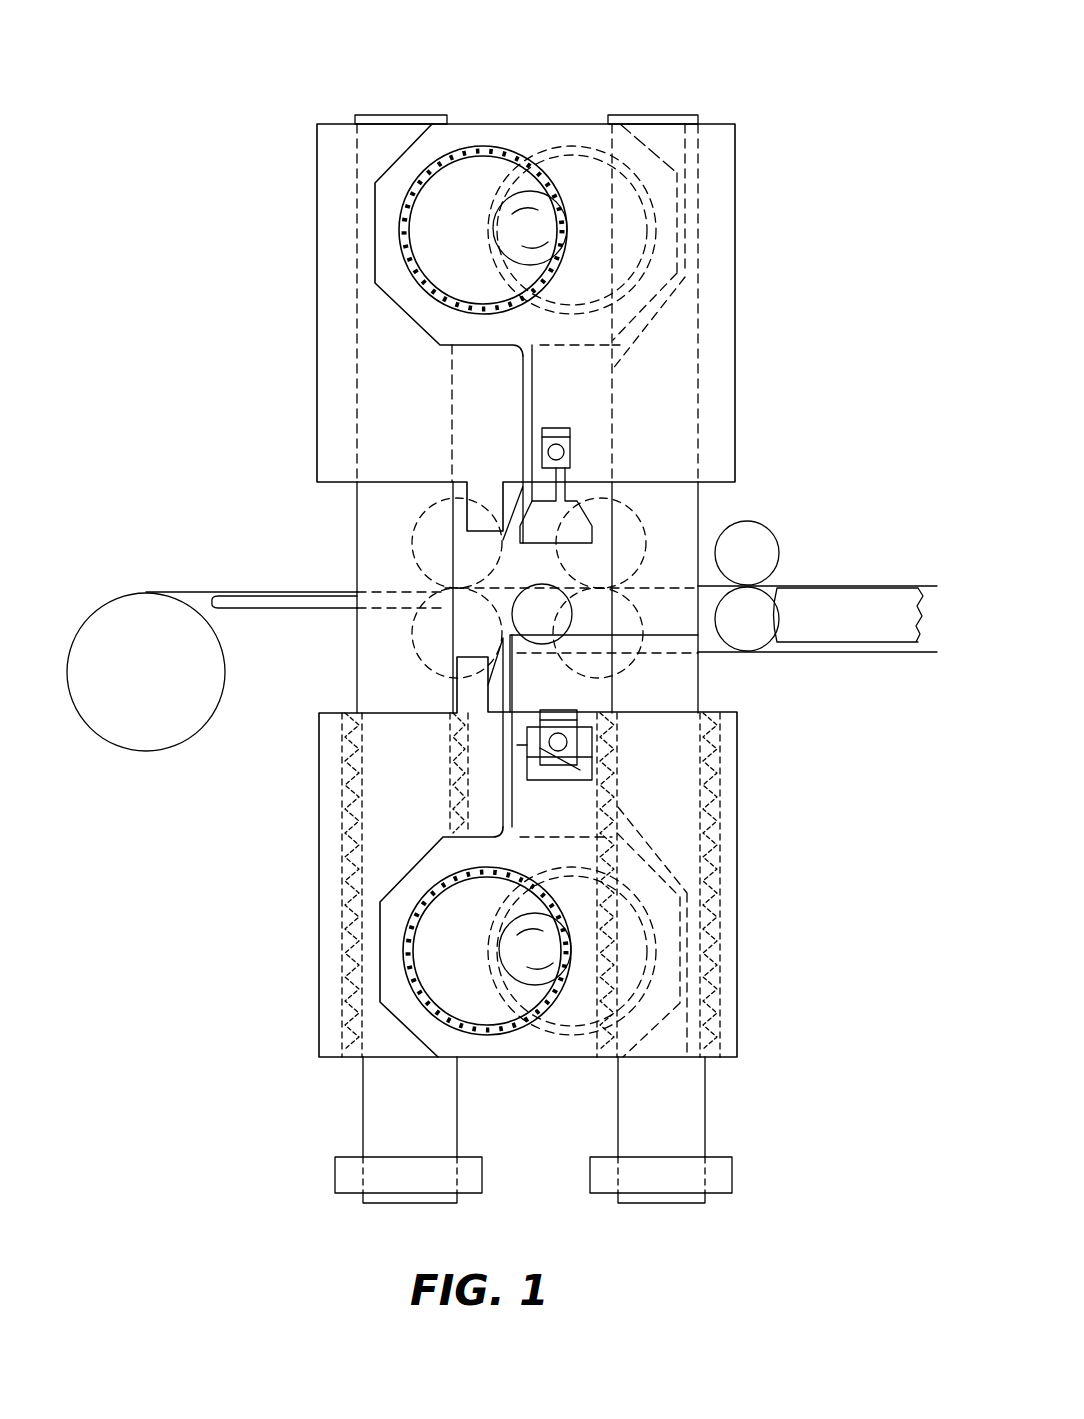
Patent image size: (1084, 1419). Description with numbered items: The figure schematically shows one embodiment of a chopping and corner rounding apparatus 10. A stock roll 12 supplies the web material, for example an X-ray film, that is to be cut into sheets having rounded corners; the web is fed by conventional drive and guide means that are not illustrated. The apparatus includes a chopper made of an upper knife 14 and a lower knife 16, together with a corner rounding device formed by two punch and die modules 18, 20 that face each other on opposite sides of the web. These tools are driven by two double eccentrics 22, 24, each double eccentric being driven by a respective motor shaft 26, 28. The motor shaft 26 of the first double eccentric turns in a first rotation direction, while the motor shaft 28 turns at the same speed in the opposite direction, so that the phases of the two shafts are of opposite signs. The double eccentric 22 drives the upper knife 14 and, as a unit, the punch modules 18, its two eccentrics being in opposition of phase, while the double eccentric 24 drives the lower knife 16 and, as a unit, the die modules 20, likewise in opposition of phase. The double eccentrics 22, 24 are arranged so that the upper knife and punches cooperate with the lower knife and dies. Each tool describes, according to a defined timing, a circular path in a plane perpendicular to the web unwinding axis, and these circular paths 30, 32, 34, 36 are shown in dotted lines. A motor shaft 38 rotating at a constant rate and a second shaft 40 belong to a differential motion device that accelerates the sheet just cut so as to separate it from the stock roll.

The chopping and corner rounding apparatus 10 is at (243, 444).
The stock roll 12 is at (148, 603).
The upper knife 14 is at (512, 496).
The lower knife 16 is at (486, 684).
The punch module 18 is at (565, 512).
The die module 20 is at (627, 677).
The double eccentric 22 is at (518, 135).
The double eccentric 24 is at (530, 1047).
The motor shaft 26 is at (540, 207).
The motor shaft 28 is at (493, 952).
The circular path 30 is at (430, 530).
The circular path 32 is at (427, 633).
The circular path 34 is at (628, 529).
The circular path 36 is at (645, 622).
The motor shaft 38 is at (251, 600).
The second shaft 40 is at (753, 632).